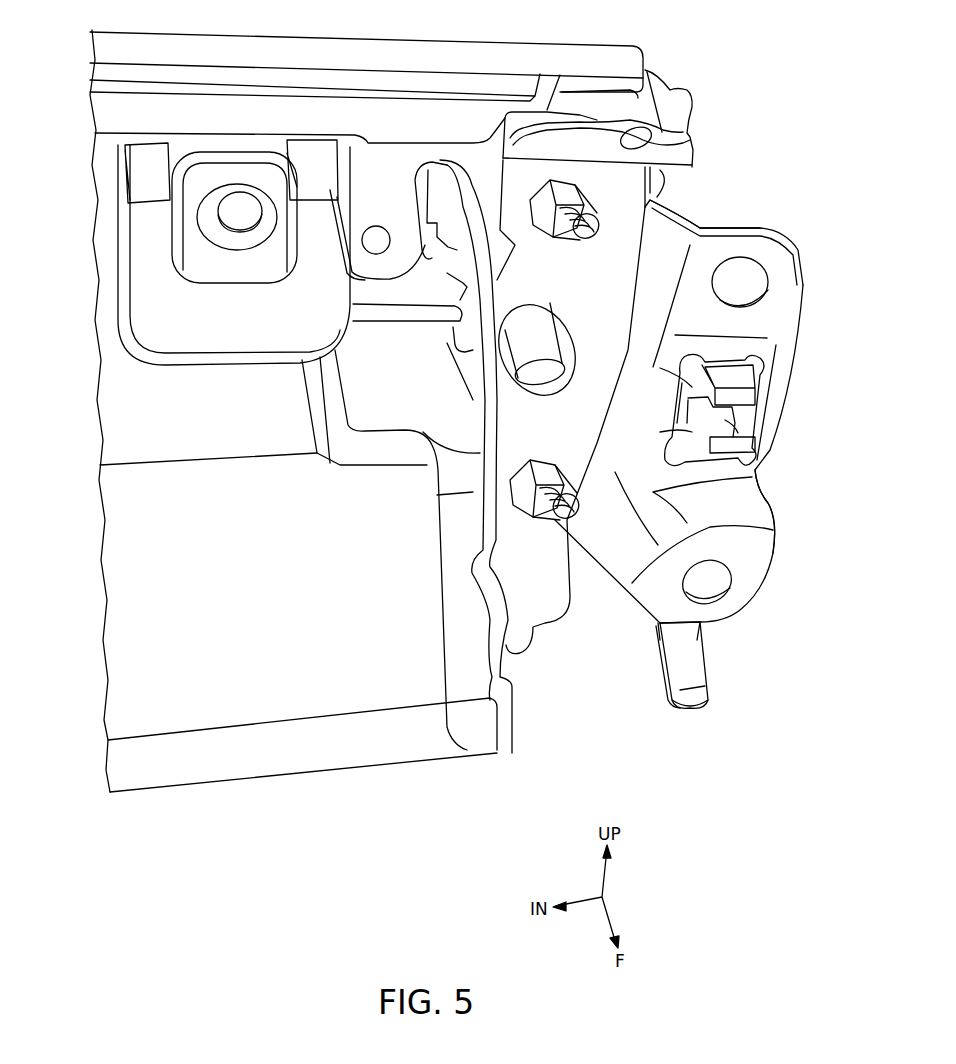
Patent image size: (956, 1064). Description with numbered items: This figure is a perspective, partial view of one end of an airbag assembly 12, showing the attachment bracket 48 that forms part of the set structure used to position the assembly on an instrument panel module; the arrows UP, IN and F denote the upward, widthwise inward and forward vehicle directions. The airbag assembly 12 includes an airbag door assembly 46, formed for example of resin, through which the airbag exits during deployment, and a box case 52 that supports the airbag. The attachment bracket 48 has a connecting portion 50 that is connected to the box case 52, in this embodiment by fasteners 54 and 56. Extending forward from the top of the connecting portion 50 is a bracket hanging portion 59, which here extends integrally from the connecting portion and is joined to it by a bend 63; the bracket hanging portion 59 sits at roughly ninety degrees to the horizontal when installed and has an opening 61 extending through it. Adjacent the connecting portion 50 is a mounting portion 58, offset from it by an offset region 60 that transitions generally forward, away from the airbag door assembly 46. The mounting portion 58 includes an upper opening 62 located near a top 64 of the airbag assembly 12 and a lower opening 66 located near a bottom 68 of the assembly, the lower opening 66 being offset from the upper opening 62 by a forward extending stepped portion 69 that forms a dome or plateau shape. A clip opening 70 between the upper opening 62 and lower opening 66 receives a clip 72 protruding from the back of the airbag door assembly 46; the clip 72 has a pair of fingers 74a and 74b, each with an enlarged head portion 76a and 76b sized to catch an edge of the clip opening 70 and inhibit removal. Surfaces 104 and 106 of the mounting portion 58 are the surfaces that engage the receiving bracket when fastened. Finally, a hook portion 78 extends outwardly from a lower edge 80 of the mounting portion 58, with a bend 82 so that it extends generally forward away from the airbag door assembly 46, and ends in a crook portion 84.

The airbag assembly 12 is at (770, 133).
The airbag door assembly 46 is at (690, 87).
The attachment bracket 48 is at (655, 188).
The connecting portion 50 is at (497, 405).
The box case 52 is at (125, 618).
The fastener 54 is at (590, 232).
The fastener 56 is at (556, 526).
The mounting portion 58 is at (775, 333).
The bracket hanging portion 59 is at (533, 142).
The offset region 60 is at (621, 400).
The opening 61 is at (680, 143).
The upper opening 62 is at (747, 258).
The bend 63 is at (605, 157).
The top 64 is at (150, 46).
The lower opening 66 is at (733, 577).
The bottom 68 is at (260, 765).
The stepped portion 69 is at (745, 507).
The clip opening 70 is at (765, 379).
The clip 72 is at (728, 418).
The finger 74a is at (752, 400).
The finger 74b is at (750, 447).
The enlarged head portion 76a is at (660, 368).
The enlarged head portion 76b is at (660, 432).
The hook portion 78 is at (695, 665).
The lower edge 80 is at (722, 607).
The bend 82 is at (666, 640).
The crook portion 84 is at (692, 705).
The surface 104 is at (788, 280).
The surface 106 is at (752, 542).